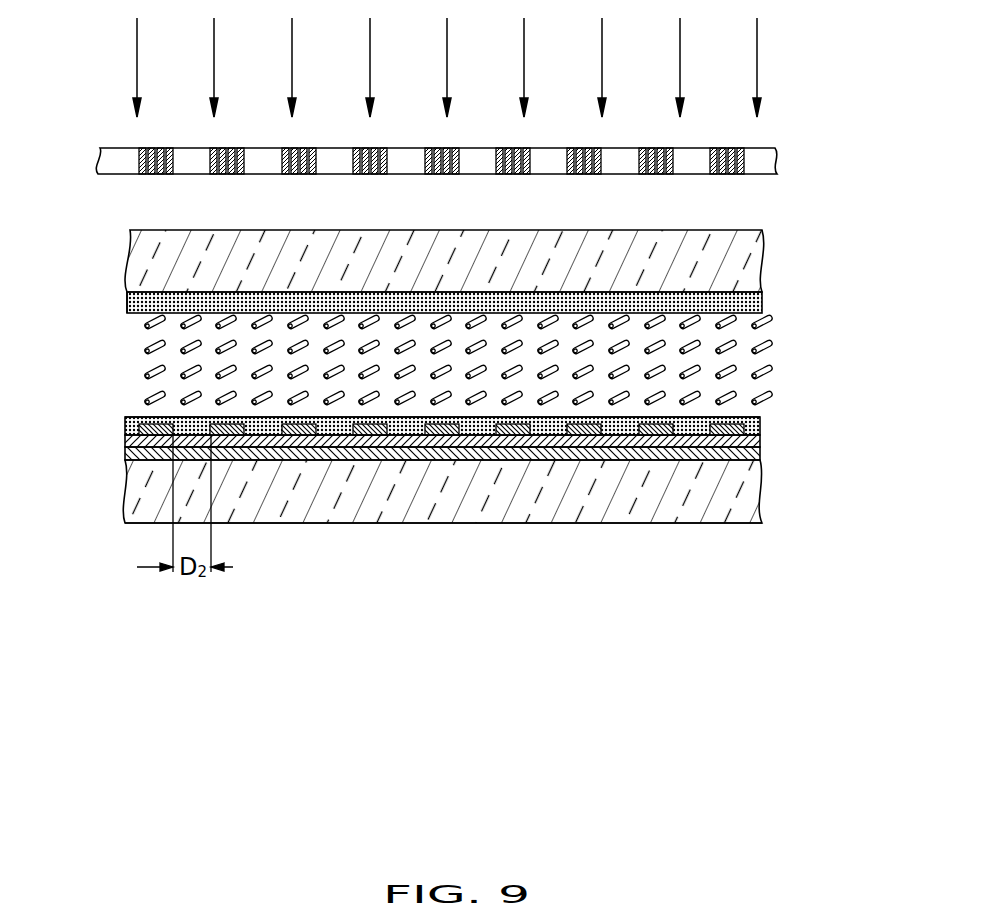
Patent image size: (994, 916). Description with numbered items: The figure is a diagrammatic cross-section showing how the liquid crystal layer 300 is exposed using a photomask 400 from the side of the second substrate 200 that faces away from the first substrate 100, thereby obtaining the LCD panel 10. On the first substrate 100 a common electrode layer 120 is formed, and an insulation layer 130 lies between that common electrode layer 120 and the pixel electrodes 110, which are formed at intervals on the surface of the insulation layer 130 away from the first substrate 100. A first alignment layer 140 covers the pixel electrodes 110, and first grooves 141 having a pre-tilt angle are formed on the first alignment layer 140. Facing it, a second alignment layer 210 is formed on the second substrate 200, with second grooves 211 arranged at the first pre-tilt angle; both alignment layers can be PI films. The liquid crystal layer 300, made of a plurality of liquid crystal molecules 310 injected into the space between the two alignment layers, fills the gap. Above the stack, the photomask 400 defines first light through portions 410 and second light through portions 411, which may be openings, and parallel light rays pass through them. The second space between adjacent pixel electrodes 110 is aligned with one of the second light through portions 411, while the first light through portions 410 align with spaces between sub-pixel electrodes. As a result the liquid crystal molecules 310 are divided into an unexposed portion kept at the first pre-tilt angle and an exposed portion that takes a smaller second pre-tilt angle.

The LCD panel 10 is at (727, 542).
The first substrate 100 is at (275, 500).
The pixel electrodes 110 is at (137, 420).
The common electrode layer 120 is at (128, 453).
The insulation layer 130 is at (130, 438).
The first alignment layer 140 is at (760, 437).
The first grooves 141 is at (760, 420).
The second substrate 200 is at (727, 242).
The second alignment layer 210 is at (760, 303).
The second grooves 211 is at (128, 302).
The liquid crystal layer 300 is at (745, 343).
The liquid crystal molecules 310 is at (768, 367).
The photomask 400 is at (486, 144).
The first light through portions 410 is at (657, 147).
The second light through portions 411 is at (627, 160).